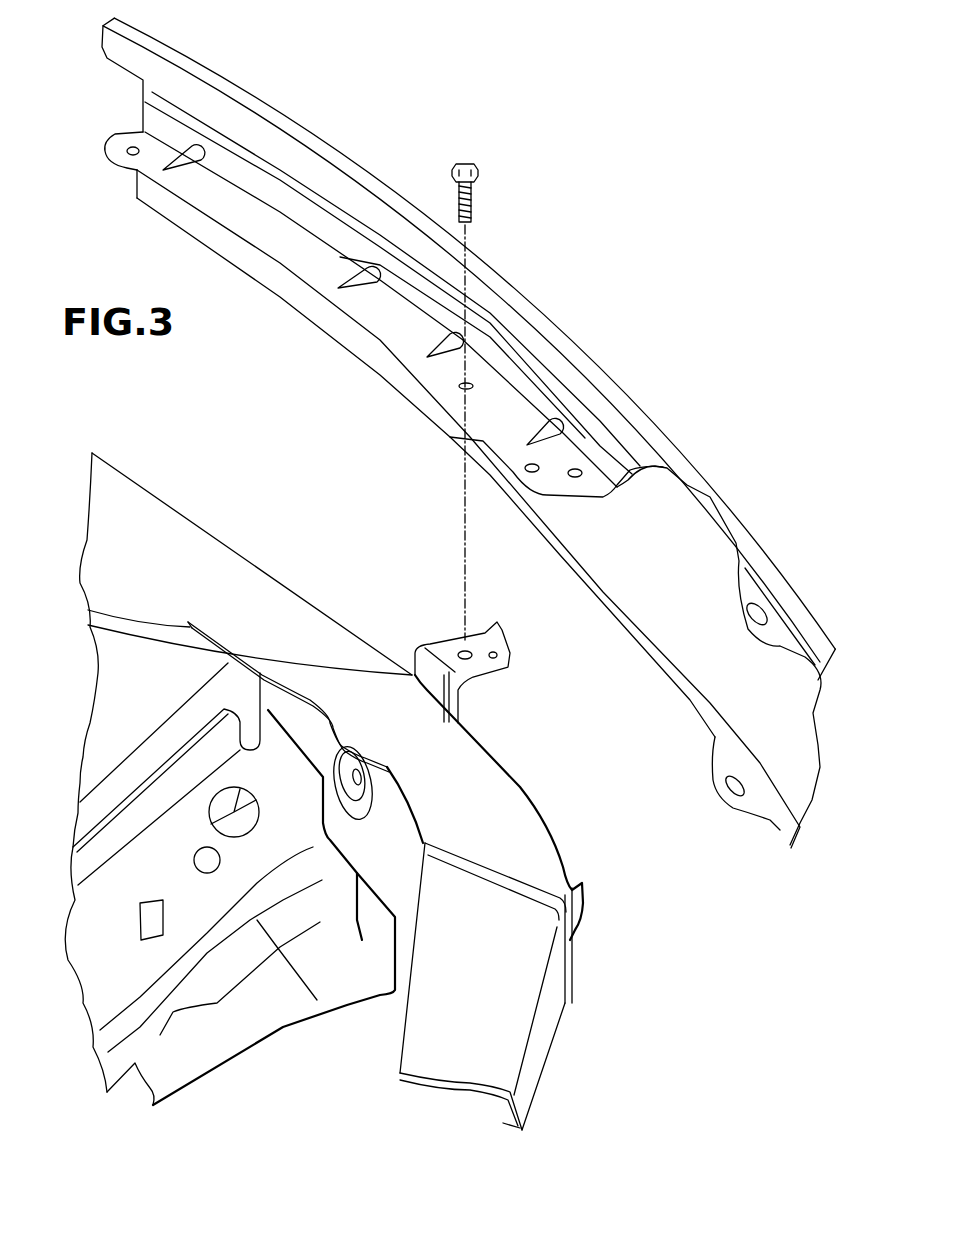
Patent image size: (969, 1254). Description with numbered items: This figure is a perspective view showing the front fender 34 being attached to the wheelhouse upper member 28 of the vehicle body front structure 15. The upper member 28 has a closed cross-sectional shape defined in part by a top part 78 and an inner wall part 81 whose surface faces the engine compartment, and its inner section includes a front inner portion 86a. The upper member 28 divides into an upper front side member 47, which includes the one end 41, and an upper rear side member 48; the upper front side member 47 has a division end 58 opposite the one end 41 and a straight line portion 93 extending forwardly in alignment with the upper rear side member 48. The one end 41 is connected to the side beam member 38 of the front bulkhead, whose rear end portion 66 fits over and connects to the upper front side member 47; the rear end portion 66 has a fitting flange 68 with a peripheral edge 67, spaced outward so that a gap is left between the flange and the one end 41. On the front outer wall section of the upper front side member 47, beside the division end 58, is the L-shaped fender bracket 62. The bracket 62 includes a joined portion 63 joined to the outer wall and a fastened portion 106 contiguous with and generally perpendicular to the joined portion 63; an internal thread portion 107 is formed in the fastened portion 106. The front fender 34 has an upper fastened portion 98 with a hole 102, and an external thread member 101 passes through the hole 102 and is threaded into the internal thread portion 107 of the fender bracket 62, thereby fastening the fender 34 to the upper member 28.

The vehicle body front structure 15 is at (668, 213).
The front fender 34 is at (342, 152).
The upper fastened portion 98 is at (490, 400).
The external thread member 101 is at (478, 166).
The hole 102 is at (471, 381).
The fender bracket 62 is at (500, 592).
The top part 78 is at (120, 520).
The upper rear side member 48 is at (195, 520).
The wheelhouse upper member 28 is at (235, 427).
The upper front side member 47 is at (348, 655).
The division end 58 is at (372, 690).
The inner wall part 81 is at (391, 877).
The front inner portion 86a is at (343, 1005).
The joined portion 63 is at (465, 705).
The internal thread portion 107 is at (472, 648).
The fastened portion 106 is at (500, 660).
The straight line portion 93 is at (485, 768).
The one end 41 is at (515, 858).
The fitting flange 68 is at (530, 887).
The peripheral edge 67 is at (578, 950).
The rear end portion 66 is at (555, 985).
The side beam member 38 is at (437, 1075).